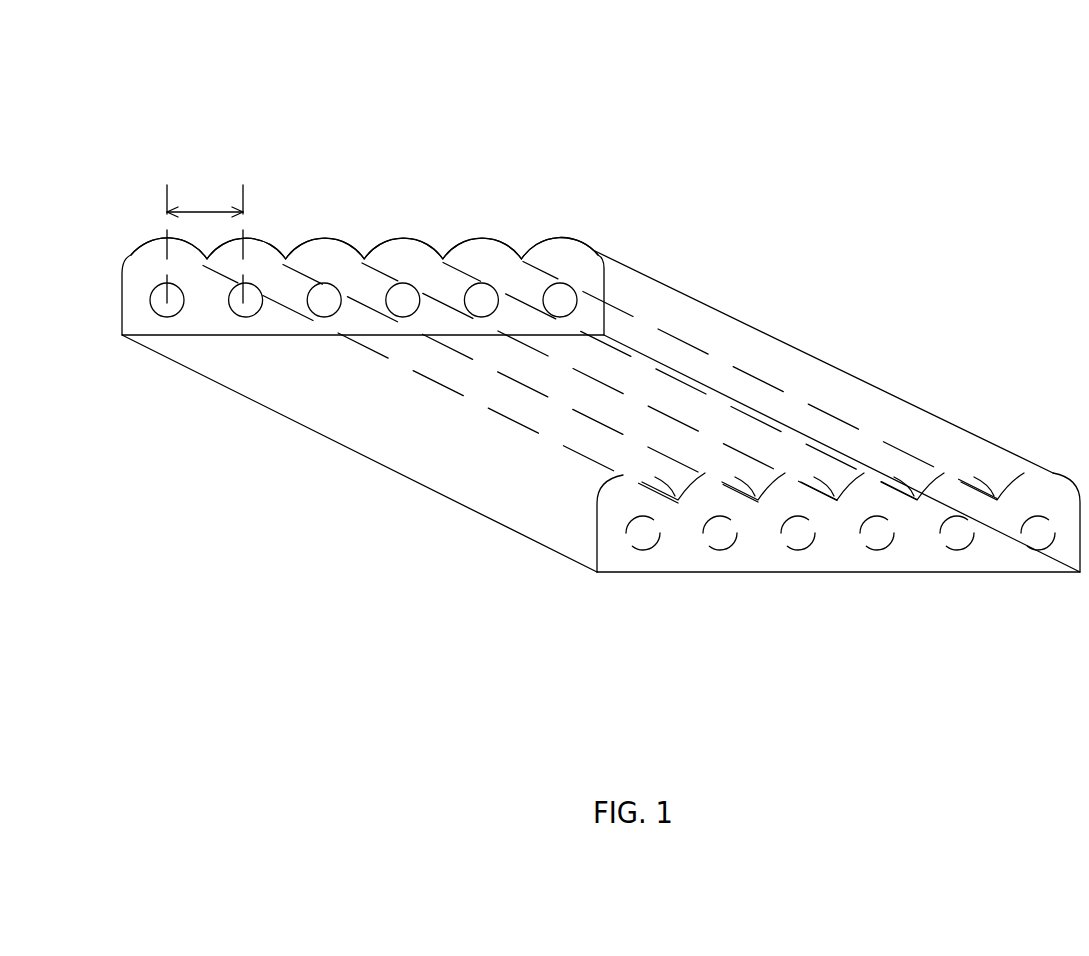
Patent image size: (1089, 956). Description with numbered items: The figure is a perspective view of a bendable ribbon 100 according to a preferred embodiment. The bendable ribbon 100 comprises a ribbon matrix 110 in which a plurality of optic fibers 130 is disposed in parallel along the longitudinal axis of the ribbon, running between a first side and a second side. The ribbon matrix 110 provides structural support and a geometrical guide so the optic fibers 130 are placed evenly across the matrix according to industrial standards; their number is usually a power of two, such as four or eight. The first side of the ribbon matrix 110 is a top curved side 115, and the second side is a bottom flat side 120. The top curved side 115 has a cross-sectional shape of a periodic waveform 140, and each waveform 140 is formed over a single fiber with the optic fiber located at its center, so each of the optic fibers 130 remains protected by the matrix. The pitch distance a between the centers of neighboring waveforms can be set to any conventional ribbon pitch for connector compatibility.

The bendable ribbon 100 is at (127, 65).
The ribbon matrix 110 is at (813, 380).
The top curved side 115 is at (680, 288).
The bottom flat side 120 is at (315, 392).
The optic fibers 130 is at (560, 297).
The waveform 140 is at (398, 257).